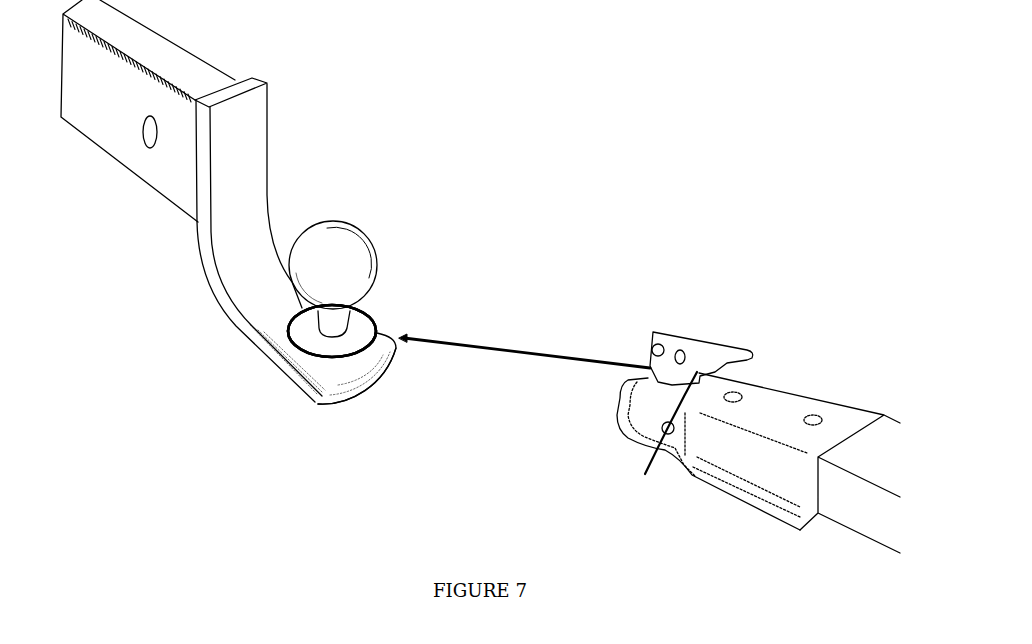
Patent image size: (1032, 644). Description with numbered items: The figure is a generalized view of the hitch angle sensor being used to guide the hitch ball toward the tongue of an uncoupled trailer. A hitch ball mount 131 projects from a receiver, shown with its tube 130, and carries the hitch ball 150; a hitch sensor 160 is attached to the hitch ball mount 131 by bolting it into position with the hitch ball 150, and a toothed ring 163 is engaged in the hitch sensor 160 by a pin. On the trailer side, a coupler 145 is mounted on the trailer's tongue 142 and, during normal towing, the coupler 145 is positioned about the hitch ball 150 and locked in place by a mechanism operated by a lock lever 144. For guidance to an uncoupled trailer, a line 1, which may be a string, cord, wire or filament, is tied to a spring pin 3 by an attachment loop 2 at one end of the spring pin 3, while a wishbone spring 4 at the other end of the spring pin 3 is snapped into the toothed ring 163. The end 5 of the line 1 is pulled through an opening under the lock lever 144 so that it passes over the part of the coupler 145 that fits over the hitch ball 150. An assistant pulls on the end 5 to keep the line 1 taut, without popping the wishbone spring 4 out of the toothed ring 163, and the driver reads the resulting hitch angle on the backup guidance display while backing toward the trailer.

The line 1 is at (540, 355).
The attachment loop 2 is at (405, 347).
The spring pin 3 is at (393, 328).
The wishbone spring 4 is at (352, 332).
The end of the line 5 is at (643, 456).
The receiver tube 130 is at (170, 172).
The hitch ball mount 131 is at (233, 323).
The trailer tongue 142 is at (817, 538).
The lock lever 144 is at (703, 340).
The coupler 145 is at (743, 467).
The hitch ball 150 is at (360, 226).
The hitch sensor 160 is at (392, 315).
The toothed ring 163 is at (388, 317).